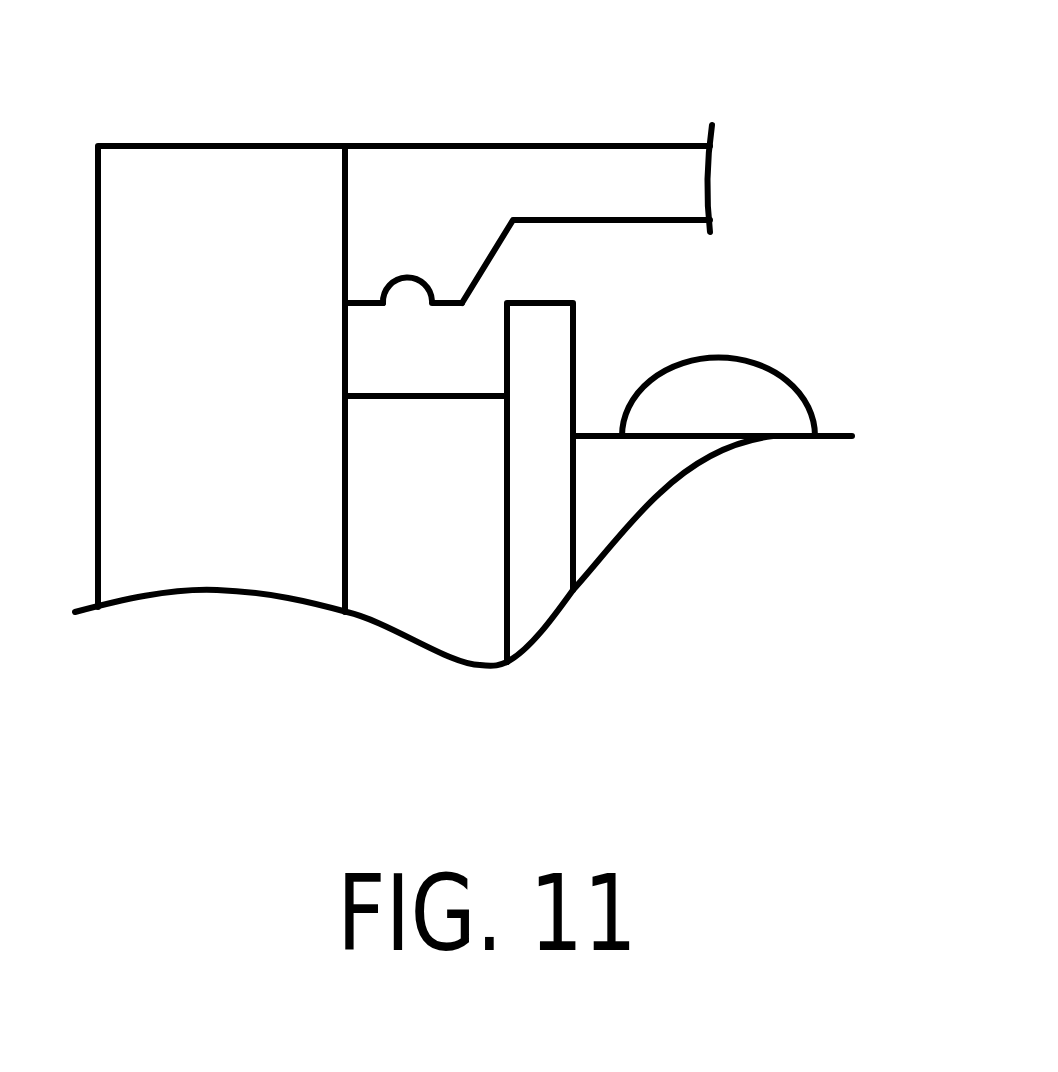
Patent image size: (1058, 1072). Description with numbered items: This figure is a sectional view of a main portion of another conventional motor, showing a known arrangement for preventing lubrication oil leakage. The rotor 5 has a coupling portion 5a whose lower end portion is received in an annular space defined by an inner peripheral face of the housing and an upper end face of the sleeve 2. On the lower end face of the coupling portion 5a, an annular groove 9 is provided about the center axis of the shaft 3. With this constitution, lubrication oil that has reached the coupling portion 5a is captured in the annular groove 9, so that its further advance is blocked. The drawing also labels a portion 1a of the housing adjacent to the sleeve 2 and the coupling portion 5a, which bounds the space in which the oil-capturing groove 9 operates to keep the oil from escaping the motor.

The shank portion 1a is at (550, 478).
The sleeve 2 is at (407, 562).
The shaft 3 is at (208, 185).
The rotor 5 is at (638, 177).
The coupling portion 5a is at (417, 237).
The annular groove 9 is at (418, 296).